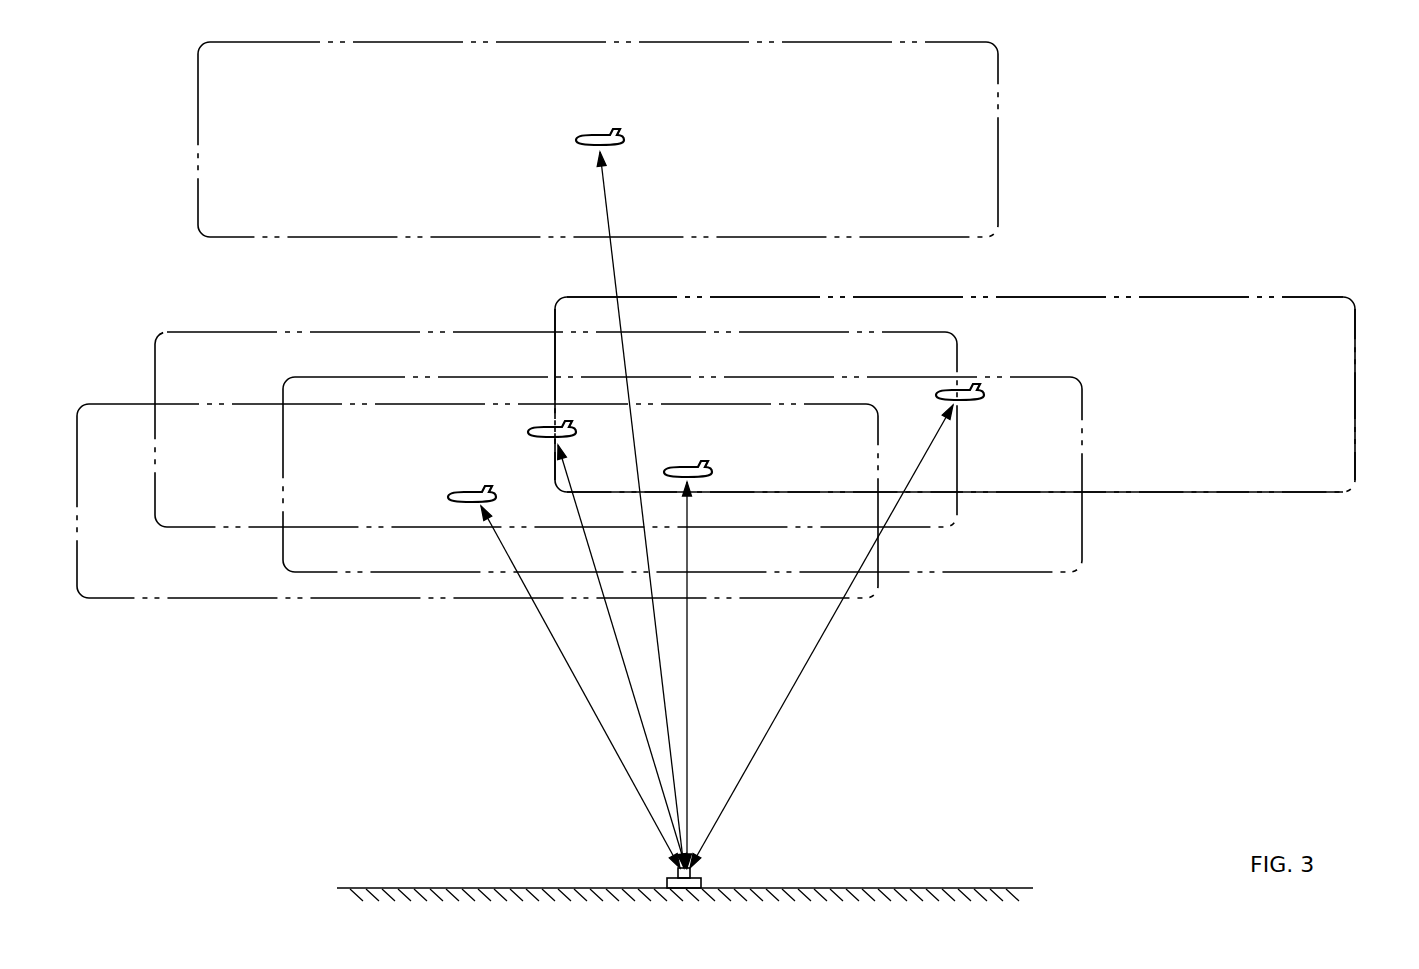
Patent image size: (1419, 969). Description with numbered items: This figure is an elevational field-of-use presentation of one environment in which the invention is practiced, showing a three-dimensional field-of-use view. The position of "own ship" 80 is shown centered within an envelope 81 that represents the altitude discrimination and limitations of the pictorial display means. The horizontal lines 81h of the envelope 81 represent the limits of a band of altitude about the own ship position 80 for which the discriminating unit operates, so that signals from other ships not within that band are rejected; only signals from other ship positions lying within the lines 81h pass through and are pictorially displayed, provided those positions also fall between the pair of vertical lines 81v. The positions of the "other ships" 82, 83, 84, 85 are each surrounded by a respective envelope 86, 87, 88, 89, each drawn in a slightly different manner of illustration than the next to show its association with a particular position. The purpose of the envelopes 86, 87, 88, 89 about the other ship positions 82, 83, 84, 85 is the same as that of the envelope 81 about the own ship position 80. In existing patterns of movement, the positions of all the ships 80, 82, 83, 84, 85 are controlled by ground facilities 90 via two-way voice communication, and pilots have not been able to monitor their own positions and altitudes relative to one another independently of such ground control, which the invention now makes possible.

The own ship position 80 is at (976, 401).
The envelope 81 is at (1271, 292).
The horizontal lines 81h is at (1160, 297).
The vertical lines 81v is at (555, 311).
The other ship position 82 is at (576, 139).
The other ship position 83 is at (449, 493).
The other ship position 84 is at (528, 433).
The other ship position 85 is at (711, 464).
The envelope 86 is at (1005, 97).
The envelope 87 is at (288, 599).
The envelope 88 is at (288, 324).
The envelope 89 is at (960, 576).
The ground facilities 90 is at (703, 877).